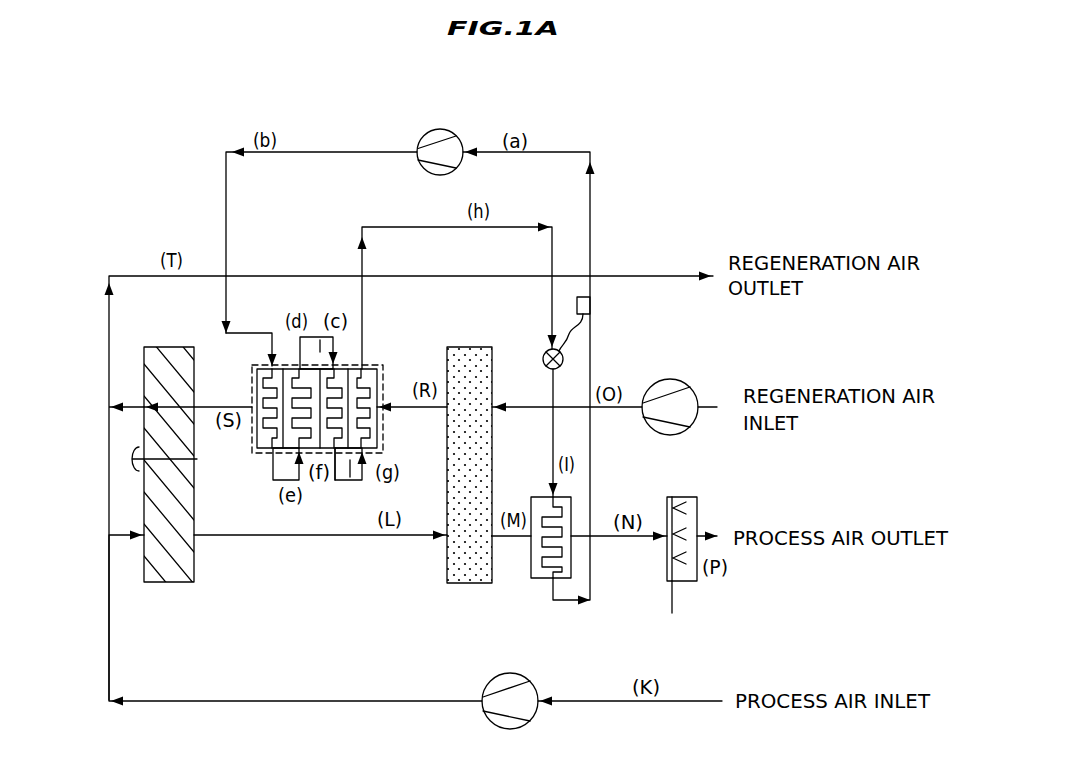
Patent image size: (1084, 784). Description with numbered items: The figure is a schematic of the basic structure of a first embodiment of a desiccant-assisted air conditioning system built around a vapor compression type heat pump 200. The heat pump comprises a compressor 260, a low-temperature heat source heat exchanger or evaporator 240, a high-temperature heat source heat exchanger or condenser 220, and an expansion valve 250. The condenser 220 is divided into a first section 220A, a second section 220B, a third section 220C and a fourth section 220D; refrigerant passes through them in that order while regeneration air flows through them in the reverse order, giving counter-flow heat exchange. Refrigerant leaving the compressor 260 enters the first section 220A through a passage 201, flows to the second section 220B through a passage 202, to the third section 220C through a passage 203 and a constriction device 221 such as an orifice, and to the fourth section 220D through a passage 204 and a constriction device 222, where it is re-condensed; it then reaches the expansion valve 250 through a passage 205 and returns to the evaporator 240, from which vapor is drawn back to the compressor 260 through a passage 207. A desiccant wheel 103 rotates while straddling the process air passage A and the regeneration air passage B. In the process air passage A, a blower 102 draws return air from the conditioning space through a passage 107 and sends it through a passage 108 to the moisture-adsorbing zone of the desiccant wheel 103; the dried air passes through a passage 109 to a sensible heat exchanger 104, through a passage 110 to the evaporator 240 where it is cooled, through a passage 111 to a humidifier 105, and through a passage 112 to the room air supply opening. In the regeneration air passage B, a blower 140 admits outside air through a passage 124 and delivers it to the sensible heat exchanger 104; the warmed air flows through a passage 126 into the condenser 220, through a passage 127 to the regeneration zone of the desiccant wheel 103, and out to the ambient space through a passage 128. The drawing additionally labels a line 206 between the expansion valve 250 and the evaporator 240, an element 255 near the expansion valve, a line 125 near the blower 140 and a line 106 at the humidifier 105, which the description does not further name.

The vapor compression type heat pump 200 is at (583, 132).
The passage 201 is at (348, 150).
The passage 203 is at (293, 365).
The compressor 260 is at (417, 132).
The passage 207 is at (590, 207).
The passage 205 is at (430, 225).
The duct to heater 206 is at (553, 423).
The expansion valve 250 is at (543, 355).
The valve controller 255 is at (590, 305).
The passage 128 is at (109, 330).
The passage 127 is at (238, 406).
The passage 126 is at (415, 410).
The regeneration air inlet duct 125 is at (622, 407).
The regeneration air passage B is at (612, 412).
The blower 140 is at (685, 380).
The passage 124 is at (710, 407).
The desiccant wheel 103 is at (190, 583).
The passage 108 is at (385, 701).
The passage 109 is at (300, 536).
The sensible heat exchanger 104 is at (447, 575).
The passage 110 is at (505, 537).
The low-temperature heat source heat exchanger (evaporator) 240 is at (533, 496).
The passage 111 is at (610, 537).
The humidifier 105 is at (680, 497).
The damper shaft 106 is at (672, 605).
The passage 112 is at (700, 534).
The blower 102 is at (492, 682).
The passage 107 is at (596, 702).
The process air passage A is at (663, 705).
The high-temperature heat source heat exchanger (condenser) 220 is at (265, 455).
The first section 220A is at (254, 446).
The second section 220B is at (268, 365).
The third section 220C is at (345, 365).
The fourth section 220D is at (383, 368).
The constriction device 221 is at (312, 337).
The passage 202 is at (273, 480).
The constriction device 222 is at (350, 498).
The passage 204 is at (336, 481).